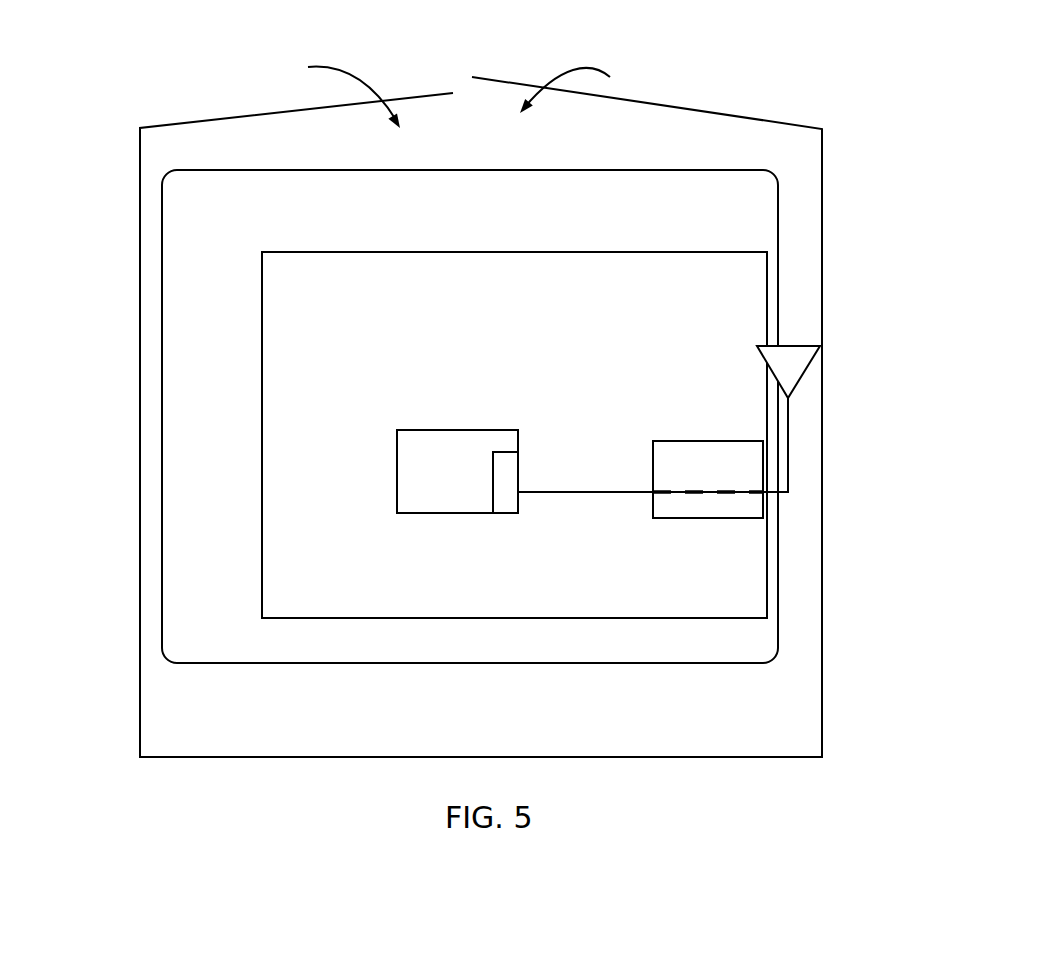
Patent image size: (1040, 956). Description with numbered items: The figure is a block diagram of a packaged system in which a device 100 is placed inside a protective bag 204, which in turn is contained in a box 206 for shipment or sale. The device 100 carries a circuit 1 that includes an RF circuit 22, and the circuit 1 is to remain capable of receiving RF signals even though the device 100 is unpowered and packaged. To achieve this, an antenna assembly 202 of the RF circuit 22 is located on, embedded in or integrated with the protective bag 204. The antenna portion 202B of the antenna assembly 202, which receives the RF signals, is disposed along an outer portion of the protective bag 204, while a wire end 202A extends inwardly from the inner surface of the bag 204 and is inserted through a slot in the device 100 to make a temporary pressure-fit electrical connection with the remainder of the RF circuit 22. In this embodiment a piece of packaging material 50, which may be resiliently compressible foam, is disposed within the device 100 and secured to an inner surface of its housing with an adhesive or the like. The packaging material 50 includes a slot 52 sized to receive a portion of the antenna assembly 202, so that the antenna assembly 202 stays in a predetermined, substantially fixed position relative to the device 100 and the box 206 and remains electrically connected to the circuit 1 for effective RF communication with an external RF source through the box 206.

The circuit 1 is at (397, 450).
The RF circuit 22 is at (503, 462).
The packaging material 50 is at (690, 518).
The slot 52 is at (672, 482).
The device 100 is at (298, 317).
The antenna assembly 202 is at (858, 437).
The wire end 202A is at (561, 492).
The antenna portion 202B is at (790, 370).
The protective bag 204 is at (778, 226).
The box 206 is at (795, 758).